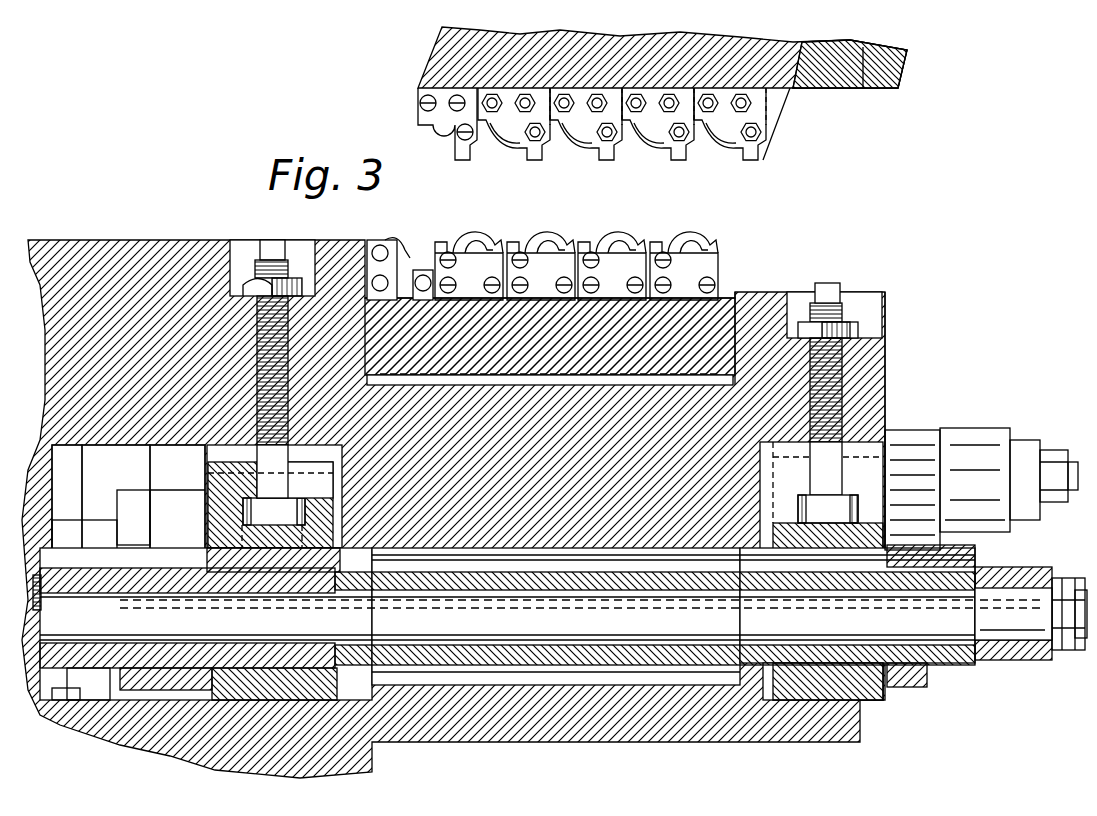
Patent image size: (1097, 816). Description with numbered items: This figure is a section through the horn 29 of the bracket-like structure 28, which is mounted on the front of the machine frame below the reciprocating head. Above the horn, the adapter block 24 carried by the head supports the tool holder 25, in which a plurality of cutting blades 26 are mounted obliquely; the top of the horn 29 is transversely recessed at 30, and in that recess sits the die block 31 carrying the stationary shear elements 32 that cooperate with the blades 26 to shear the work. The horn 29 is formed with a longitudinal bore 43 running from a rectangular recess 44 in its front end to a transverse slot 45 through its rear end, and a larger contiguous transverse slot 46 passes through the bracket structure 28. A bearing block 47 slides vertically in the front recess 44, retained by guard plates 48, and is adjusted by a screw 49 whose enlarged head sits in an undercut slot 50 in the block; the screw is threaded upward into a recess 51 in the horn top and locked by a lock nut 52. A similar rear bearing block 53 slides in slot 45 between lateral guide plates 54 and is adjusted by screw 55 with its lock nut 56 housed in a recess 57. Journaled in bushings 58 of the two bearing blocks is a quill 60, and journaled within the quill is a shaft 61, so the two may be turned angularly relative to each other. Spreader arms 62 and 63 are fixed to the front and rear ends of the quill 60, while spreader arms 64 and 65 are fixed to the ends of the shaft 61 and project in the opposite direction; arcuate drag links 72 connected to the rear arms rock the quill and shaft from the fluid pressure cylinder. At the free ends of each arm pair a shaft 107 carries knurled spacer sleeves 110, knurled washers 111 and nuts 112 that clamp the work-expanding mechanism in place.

The adapter block 24 is at (882, 90).
The tool holder 25 is at (418, 80).
The cutting tools or blades 26 is at (648, 152).
The bracket-like structure 28 is at (84, 236).
The horn 29 is at (887, 372).
The transverse recess 30 is at (730, 292).
The die block 31 is at (722, 300).
The dies or stationary shear elements 32 is at (585, 250).
The longitudinal bore 43 is at (585, 685).
The rectangular shaped recess 44 is at (880, 442).
The transverse slot 45 is at (215, 450).
The transverse slot 46 is at (118, 702).
The bearing block 47 is at (870, 700).
The guard plates 48 is at (900, 700).
The adjusting screw 49 is at (843, 310).
The undercut slot 50 is at (785, 495).
The recess 51 is at (862, 340).
The lock nut 52 is at (865, 322).
The rear bearing block 53 is at (325, 660).
The lateral guide plates 54 is at (250, 690).
The adjusting screw 55 is at (252, 275).
The lock nut 56 is at (240, 275).
The recess 57 is at (305, 265).
The bushings 58 is at (268, 665).
The quill 60 is at (440, 668).
The shaft 61 is at (500, 640).
The spreader arm 62 is at (970, 688).
The spreader arm 63 is at (186, 700).
The spreader arm 64 is at (998, 548).
The spreader arm 65 is at (95, 520).
The arcuate drag links 72 is at (70, 702).
The shaft 107 is at (1075, 495).
The tubular spacer sleeves 110 is at (180, 455).
The knurled washers 111 is at (60, 462).
The nuts 112 is at (1055, 460).